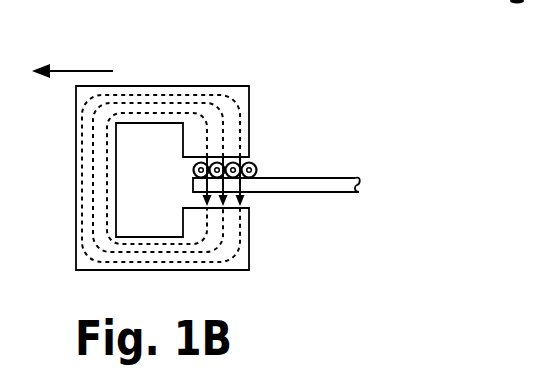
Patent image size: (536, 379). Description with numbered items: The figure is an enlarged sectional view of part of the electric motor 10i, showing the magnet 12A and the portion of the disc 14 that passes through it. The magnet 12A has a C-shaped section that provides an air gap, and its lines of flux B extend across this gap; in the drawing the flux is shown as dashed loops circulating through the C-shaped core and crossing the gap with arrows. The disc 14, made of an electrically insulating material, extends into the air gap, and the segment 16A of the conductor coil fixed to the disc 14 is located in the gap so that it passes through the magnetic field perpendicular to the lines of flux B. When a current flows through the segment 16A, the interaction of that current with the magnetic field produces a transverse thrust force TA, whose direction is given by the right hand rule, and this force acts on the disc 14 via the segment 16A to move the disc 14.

The electric motor 10i is at (235, 159).
The magnet 12A is at (250, 245).
The disc 14 is at (332, 192).
The segment 16A is at (266, 167).
The lines of flux B is at (254, 163).
The thrust force TA is at (72, 59).